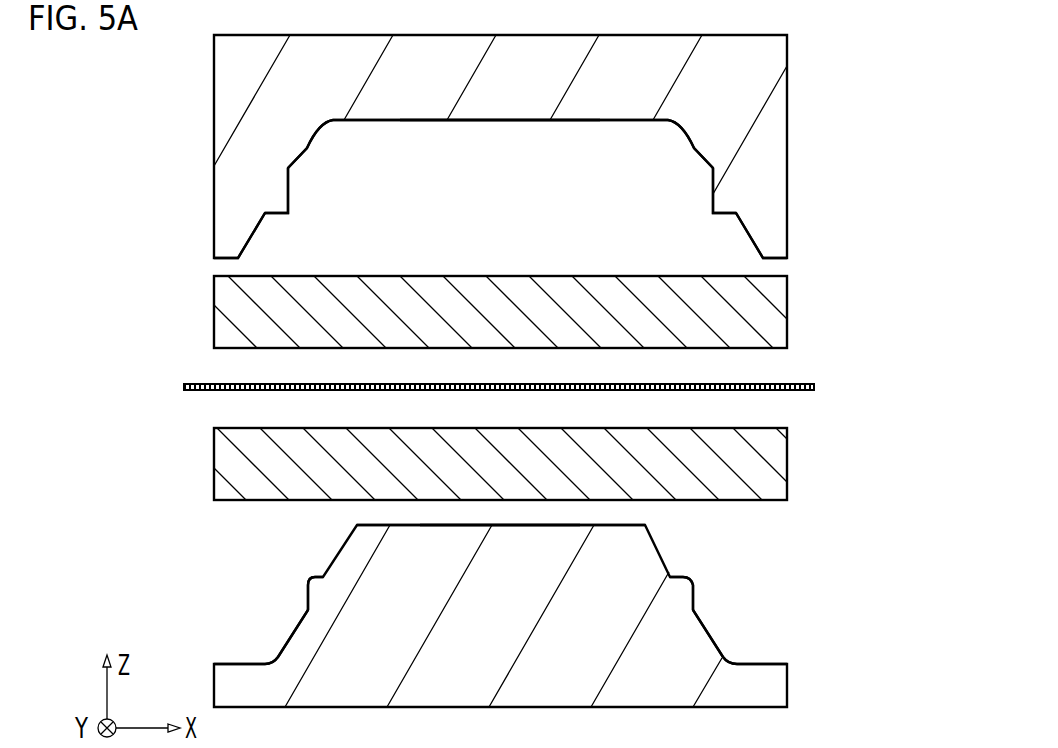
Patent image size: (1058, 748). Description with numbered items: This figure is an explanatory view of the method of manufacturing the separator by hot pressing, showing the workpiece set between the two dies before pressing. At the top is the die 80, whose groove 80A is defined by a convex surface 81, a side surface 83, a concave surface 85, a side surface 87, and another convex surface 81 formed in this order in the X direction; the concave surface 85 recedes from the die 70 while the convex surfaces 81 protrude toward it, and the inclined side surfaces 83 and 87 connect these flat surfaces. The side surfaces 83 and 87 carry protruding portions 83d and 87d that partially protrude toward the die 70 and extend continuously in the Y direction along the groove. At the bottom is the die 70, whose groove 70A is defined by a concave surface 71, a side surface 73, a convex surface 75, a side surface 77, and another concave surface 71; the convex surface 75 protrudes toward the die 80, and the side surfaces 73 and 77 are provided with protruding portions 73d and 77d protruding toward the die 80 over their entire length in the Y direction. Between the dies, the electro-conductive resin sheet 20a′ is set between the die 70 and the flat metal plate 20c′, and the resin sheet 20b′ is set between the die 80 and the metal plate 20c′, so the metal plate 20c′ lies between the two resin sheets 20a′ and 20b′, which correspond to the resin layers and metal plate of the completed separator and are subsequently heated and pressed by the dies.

The die 80 is at (813, 69).
The groove 80A is at (637, 162).
The convex surface 81 is at (230, 262).
The side surface 83 is at (307, 145).
The protruding portion 83d is at (290, 210).
The concave surface 85 is at (502, 120).
The side surface 87 is at (693, 148).
The protruding portion 87d is at (711, 205).
The resin sheet 20a′ is at (816, 468).
The resin sheet 20b′ is at (816, 299).
The metal plate 20c′ is at (833, 390).
The die 70 is at (815, 663).
The groove 70A is at (233, 561).
The concave surface 71 is at (237, 663).
The side surface 73 is at (300, 624).
The protruding portion 73d is at (309, 581).
The convex surface 75 is at (613, 525).
The side surface 77 is at (702, 623).
The protruding portion 77d is at (692, 578).